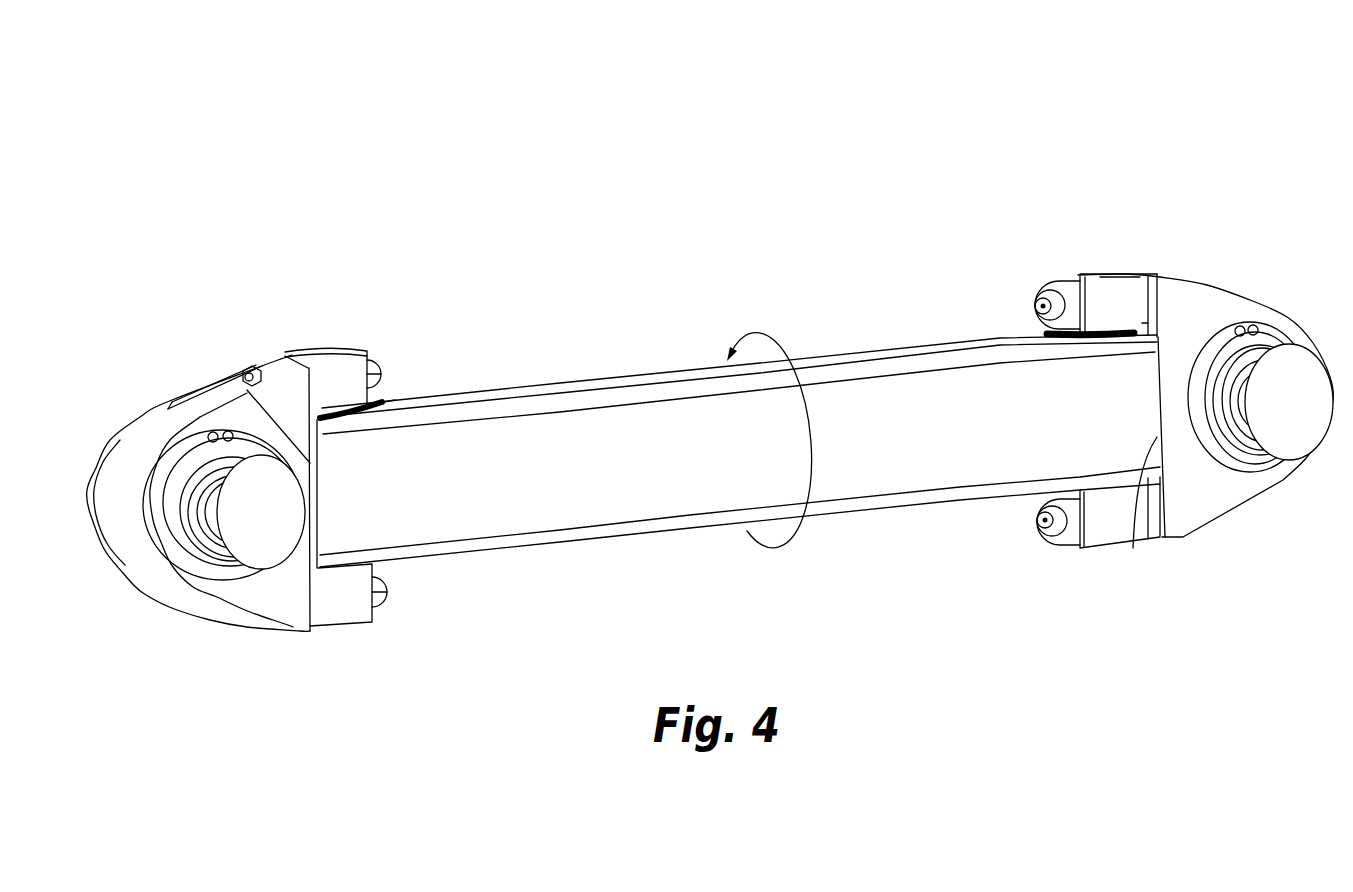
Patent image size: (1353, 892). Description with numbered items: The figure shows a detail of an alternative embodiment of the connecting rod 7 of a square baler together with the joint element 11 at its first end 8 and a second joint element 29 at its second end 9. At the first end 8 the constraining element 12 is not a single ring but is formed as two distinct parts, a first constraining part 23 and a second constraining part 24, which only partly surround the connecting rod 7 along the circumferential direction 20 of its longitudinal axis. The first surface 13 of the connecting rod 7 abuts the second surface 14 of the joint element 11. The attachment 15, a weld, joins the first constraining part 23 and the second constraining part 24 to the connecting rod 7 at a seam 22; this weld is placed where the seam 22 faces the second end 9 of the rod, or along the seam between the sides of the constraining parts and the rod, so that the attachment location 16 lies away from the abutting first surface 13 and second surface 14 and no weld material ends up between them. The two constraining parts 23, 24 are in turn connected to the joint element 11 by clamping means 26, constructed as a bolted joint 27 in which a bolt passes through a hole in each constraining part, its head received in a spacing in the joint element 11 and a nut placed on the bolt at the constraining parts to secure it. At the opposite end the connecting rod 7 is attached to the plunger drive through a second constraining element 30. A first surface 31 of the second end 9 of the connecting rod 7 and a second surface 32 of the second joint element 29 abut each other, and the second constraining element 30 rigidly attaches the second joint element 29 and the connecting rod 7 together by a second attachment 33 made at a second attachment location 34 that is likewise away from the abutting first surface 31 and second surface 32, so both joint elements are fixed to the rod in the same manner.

The connecting rod 7 is at (897, 304).
The first end 8 is at (987, 286).
The second end 9 is at (421, 346).
The joint element 11 is at (1298, 283).
The constraining element 12 is at (1104, 232).
The first surface 13 is at (1163, 343).
The second surface 14 is at (1138, 550).
The attachment 15 is at (1142, 323).
The attachment location 16 is at (1100, 312).
The circumferential direction 20 is at (813, 437).
The seam 22 is at (1066, 278).
The first constraining part 23 is at (1117, 303).
The second constraining part 24 is at (1103, 523).
The clamping means 26 is at (1121, 197).
The bolted joint 27 is at (1042, 307).
The second joint element 29 is at (121, 383).
The second constraining element 30 is at (323, 321).
The first surface 31 is at (240, 378).
The second surface 32 is at (307, 366).
The second attachment 33 is at (347, 413).
The second attachment location 34 is at (390, 400).